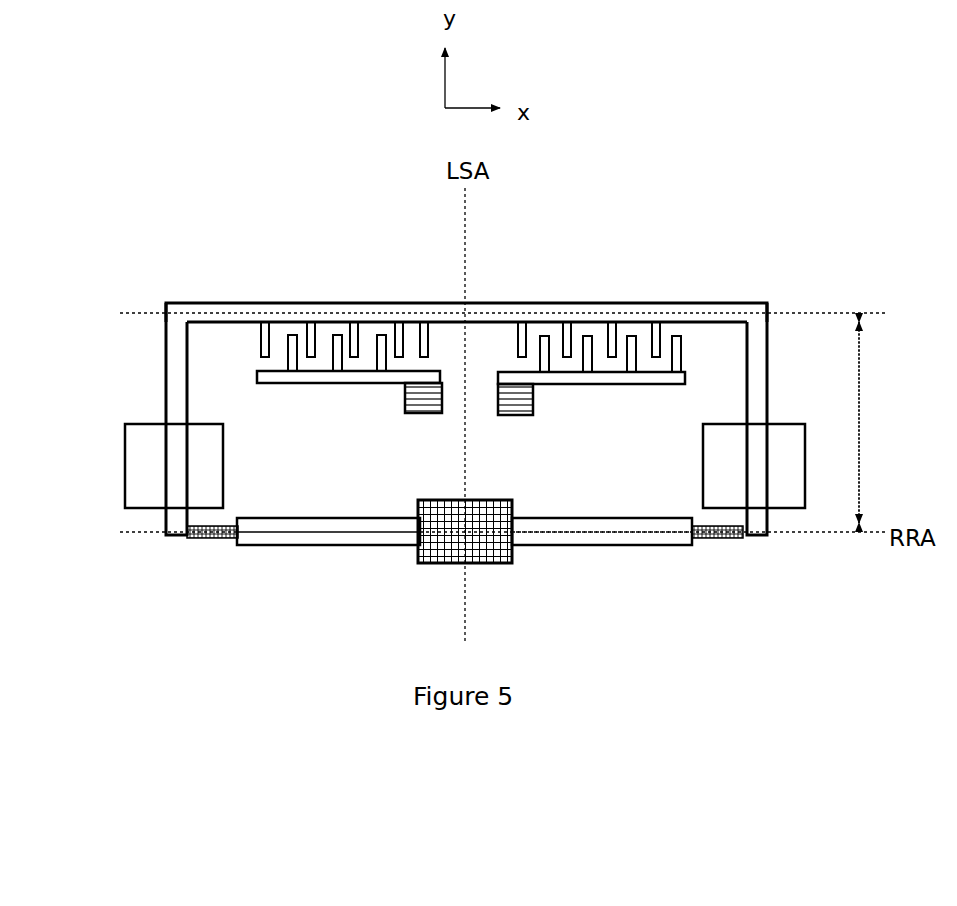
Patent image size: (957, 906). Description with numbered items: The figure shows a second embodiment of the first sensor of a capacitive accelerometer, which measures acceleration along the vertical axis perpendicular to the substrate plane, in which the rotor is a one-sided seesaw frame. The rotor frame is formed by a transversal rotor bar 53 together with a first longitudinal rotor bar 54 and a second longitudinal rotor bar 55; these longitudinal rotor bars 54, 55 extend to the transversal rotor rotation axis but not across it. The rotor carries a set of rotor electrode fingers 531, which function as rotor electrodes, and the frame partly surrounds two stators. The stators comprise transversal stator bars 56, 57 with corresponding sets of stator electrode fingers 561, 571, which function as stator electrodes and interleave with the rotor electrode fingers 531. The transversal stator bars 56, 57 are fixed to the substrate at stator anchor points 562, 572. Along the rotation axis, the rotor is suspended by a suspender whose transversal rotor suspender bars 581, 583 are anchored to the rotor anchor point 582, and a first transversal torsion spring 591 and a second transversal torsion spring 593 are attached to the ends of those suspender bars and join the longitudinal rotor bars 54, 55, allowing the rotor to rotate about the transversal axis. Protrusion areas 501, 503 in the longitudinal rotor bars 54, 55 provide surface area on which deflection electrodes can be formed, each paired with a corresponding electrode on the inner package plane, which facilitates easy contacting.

The transversal rotor bar 53 is at (712, 310).
The first longitudinal rotor bar 54 is at (165, 350).
The second longitudinal rotor bar 55 is at (755, 393).
The rotor electrode fingers 531 is at (264, 338).
The transversal stator bar 56 is at (579, 376).
The stator electrode fingers 561 is at (679, 342).
The stator anchor point 562 is at (524, 407).
The transversal stator bar 57 is at (319, 369).
The stator electrode fingers 571 is at (424, 350).
The stator anchor point 572 is at (416, 399).
The protrusion area 501 is at (153, 458).
The protrusion area 503 is at (760, 471).
The right spring beam 581 is at (596, 524).
The rotor anchor point 582 is at (446, 527).
The left spring beam 583 is at (340, 528).
The first transversal torsion spring 591 is at (710, 525).
The second transversal torsion spring 593 is at (220, 527).